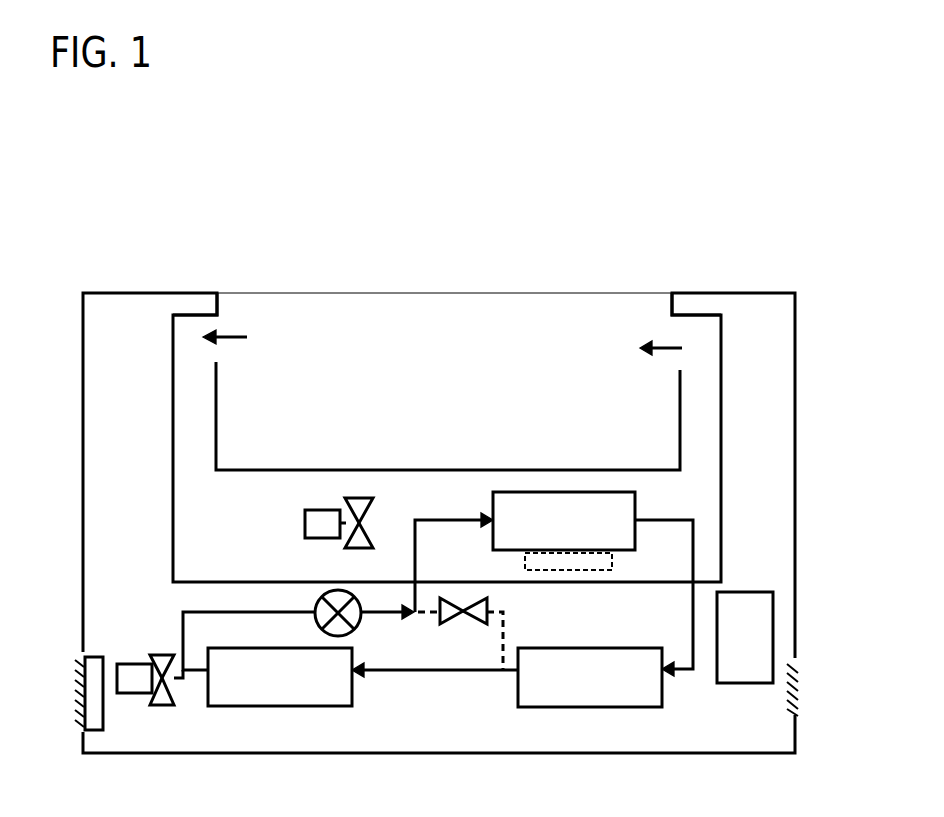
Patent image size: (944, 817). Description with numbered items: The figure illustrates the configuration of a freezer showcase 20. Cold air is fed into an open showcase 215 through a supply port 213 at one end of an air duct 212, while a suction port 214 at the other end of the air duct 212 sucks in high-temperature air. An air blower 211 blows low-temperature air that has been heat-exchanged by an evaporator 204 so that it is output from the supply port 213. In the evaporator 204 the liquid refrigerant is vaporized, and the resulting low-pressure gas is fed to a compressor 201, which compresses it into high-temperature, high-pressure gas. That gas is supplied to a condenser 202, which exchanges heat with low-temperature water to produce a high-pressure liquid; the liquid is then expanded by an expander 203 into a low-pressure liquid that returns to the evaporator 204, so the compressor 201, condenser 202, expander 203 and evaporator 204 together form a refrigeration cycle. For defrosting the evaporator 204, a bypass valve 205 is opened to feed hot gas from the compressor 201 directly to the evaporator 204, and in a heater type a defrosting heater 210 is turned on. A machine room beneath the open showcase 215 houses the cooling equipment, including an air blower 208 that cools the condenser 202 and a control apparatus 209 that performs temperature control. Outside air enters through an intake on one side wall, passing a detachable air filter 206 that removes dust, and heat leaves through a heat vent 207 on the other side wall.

The freezer showcase 20 is at (430, 210).
The compressor 201 is at (550, 645).
The condenser 202 is at (265, 707).
The expander 203 is at (352, 617).
The evaporator 204 is at (638, 515).
The bypass valve 205 is at (450, 622).
The air filter 206 is at (105, 655).
The heat vent 207 is at (797, 665).
The air blower 208 is at (152, 700).
The control apparatus 209 is at (738, 590).
The defrosting heater 210 is at (612, 557).
The air blower 211 is at (372, 525).
The air duct 212 is at (219, 434).
The supply port 213 is at (662, 315).
The suction port 214 is at (227, 322).
The open showcase 215 is at (468, 450).